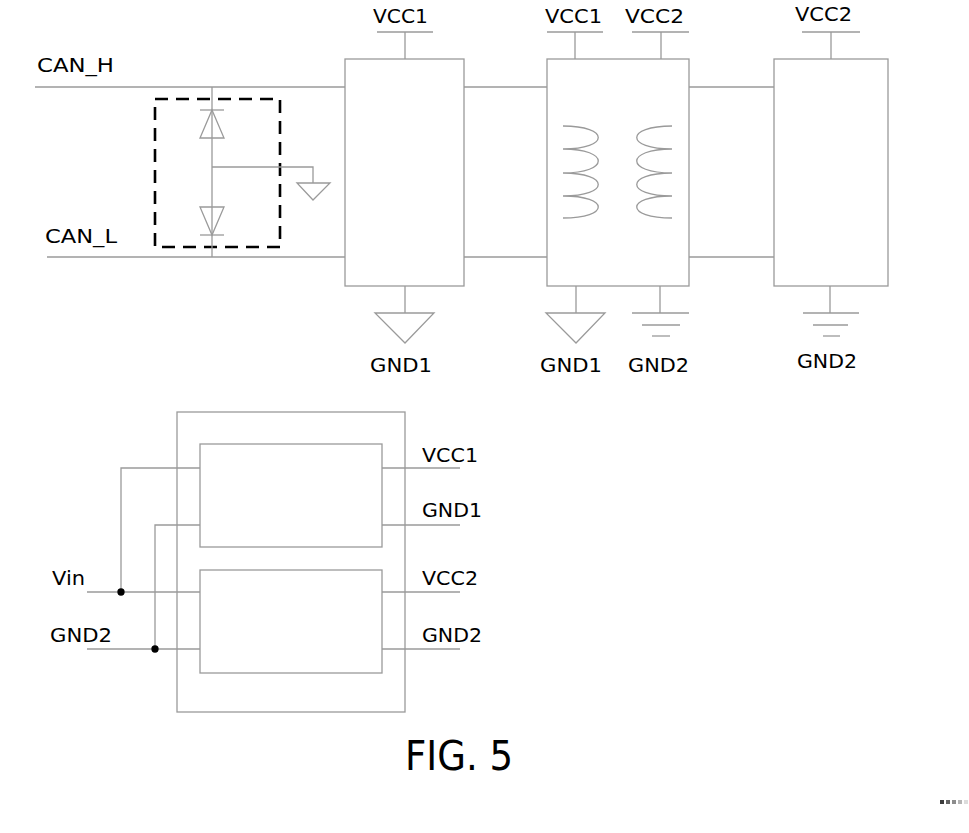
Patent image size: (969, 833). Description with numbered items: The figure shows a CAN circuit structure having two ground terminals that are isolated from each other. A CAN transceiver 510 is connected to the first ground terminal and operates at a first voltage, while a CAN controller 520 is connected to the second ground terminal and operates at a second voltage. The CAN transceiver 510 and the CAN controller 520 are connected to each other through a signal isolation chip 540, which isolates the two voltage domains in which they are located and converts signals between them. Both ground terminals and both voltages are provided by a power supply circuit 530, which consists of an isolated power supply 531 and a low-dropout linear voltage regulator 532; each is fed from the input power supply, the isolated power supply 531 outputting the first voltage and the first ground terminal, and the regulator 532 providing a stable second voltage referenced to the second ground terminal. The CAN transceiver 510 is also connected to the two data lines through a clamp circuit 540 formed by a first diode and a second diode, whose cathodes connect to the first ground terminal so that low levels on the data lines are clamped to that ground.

The CAN transceiver 510 is at (420, 267).
The CAN controller 520 is at (848, 267).
The power supply circuit 530 is at (215, 706).
The isolated power supply 531 is at (243, 541).
The low-dropout linear voltage regulator 532 is at (243, 664).
The signal isolation chip 540 is at (270, 127).